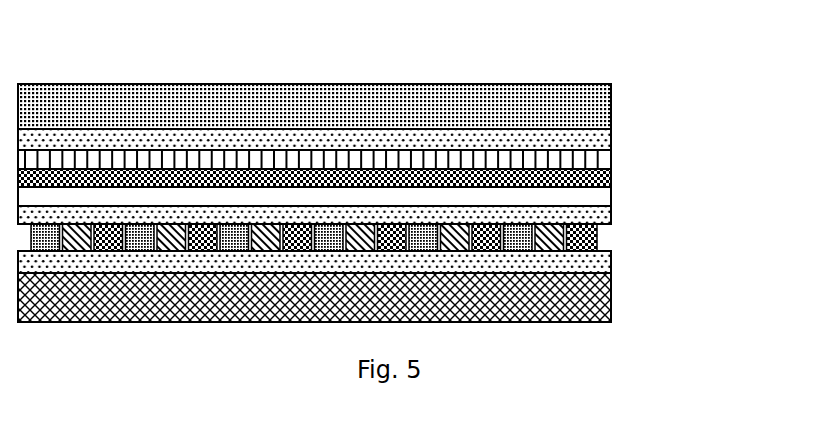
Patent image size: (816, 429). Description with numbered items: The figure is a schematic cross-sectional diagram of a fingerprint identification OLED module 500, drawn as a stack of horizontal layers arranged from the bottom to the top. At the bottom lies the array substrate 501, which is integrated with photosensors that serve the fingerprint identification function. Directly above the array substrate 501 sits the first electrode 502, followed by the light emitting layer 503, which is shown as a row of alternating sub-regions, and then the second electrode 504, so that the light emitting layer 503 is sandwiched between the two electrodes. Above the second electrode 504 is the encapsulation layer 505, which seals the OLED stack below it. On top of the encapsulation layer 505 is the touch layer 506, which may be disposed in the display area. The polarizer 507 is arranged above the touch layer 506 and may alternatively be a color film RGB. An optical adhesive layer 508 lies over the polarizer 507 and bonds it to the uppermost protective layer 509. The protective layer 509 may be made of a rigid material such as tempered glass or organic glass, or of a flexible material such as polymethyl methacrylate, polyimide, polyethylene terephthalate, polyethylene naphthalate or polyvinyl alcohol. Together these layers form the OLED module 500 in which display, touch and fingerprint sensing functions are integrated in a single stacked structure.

The OLED module 500 is at (425, 46).
The array substrate 501 is at (611, 312).
The first electrode 502 is at (611, 262).
The light emitting layer 503 is at (609, 240).
The second electrode 504 is at (611, 218).
The encapsulation layer 505 is at (611, 198).
The touch layer 506 is at (611, 176).
The polarizer 507 is at (611, 157).
The optical adhesive layer 508 is at (611, 140).
The protective layer 509 is at (611, 105).